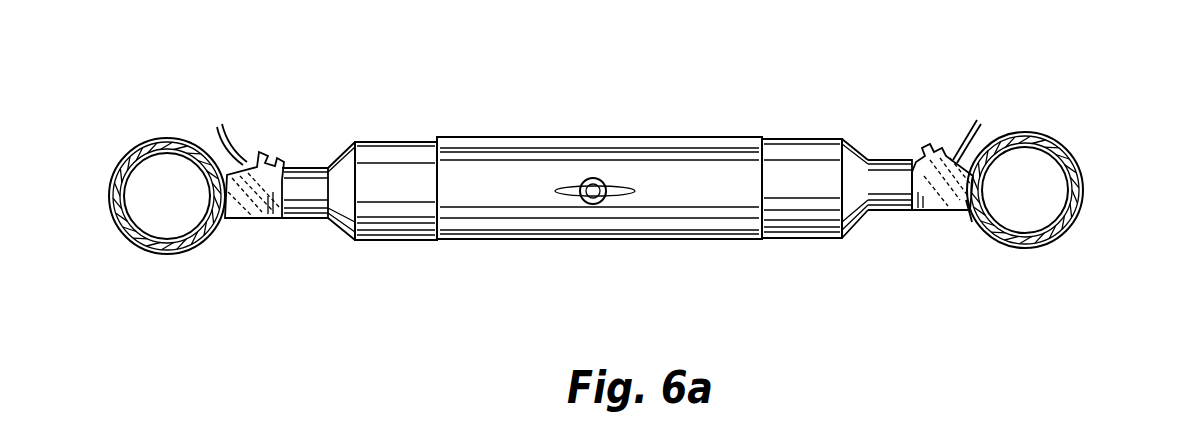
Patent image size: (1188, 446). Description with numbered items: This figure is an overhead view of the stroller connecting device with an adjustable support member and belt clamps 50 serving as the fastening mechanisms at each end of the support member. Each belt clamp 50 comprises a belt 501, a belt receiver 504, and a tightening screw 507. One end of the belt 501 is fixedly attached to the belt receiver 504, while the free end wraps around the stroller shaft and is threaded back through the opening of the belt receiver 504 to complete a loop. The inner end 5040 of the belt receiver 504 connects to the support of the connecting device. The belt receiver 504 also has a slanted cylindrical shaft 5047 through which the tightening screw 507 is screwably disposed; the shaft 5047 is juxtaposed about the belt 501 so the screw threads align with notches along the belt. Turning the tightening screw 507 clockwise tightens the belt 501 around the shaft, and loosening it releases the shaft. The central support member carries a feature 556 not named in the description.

The belt clamp 50 is at (1001, 171).
The belt 501 is at (1083, 207).
The belt receiver 504 is at (864, 218).
The inner end 5040 is at (880, 160).
The tightening screw 507 is at (905, 152).
The slanted cylindrical shaft 5047 is at (973, 230).
The pivot hole 556 is at (602, 204).